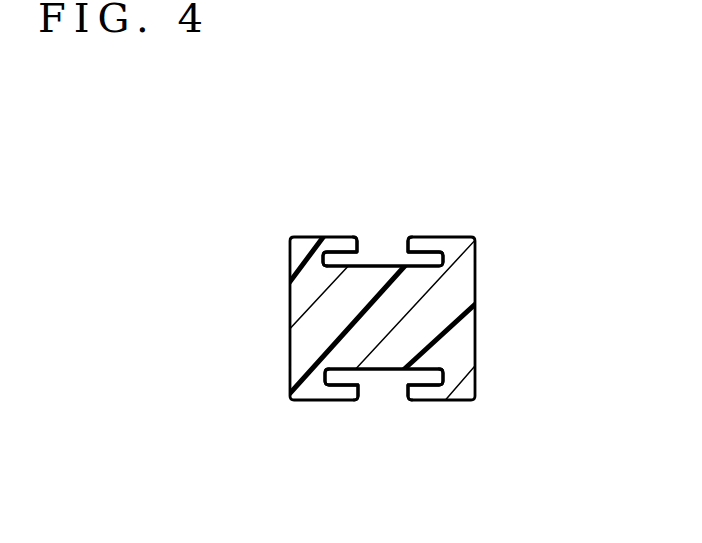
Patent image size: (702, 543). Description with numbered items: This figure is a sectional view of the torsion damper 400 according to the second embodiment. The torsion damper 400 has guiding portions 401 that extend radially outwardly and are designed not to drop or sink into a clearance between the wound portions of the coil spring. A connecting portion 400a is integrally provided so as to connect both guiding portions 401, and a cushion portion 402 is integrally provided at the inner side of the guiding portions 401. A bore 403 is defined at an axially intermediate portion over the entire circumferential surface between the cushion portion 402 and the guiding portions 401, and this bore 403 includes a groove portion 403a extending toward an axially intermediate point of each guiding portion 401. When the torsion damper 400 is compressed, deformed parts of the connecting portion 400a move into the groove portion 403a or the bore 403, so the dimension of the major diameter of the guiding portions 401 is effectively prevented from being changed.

The torsion damper 400 is at (448, 298).
The connecting portion 400a is at (368, 263).
The guiding portions 401 is at (460, 237).
The cushion portion 402 is at (288, 325).
The bore 403 is at (378, 385).
The groove portion 403a is at (320, 234).